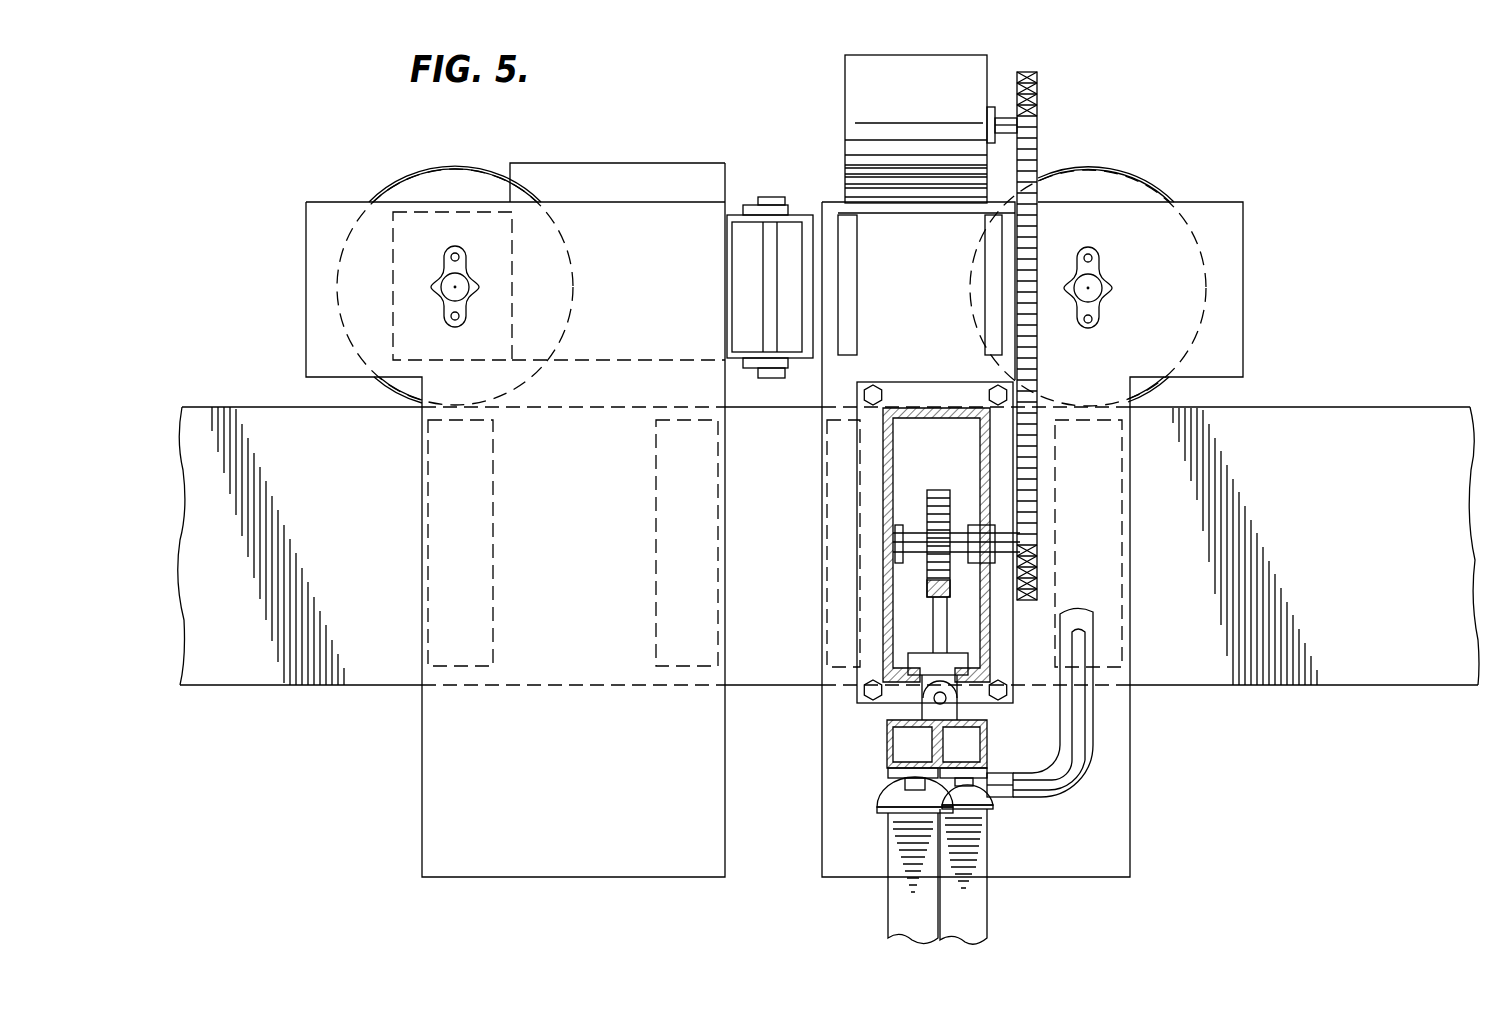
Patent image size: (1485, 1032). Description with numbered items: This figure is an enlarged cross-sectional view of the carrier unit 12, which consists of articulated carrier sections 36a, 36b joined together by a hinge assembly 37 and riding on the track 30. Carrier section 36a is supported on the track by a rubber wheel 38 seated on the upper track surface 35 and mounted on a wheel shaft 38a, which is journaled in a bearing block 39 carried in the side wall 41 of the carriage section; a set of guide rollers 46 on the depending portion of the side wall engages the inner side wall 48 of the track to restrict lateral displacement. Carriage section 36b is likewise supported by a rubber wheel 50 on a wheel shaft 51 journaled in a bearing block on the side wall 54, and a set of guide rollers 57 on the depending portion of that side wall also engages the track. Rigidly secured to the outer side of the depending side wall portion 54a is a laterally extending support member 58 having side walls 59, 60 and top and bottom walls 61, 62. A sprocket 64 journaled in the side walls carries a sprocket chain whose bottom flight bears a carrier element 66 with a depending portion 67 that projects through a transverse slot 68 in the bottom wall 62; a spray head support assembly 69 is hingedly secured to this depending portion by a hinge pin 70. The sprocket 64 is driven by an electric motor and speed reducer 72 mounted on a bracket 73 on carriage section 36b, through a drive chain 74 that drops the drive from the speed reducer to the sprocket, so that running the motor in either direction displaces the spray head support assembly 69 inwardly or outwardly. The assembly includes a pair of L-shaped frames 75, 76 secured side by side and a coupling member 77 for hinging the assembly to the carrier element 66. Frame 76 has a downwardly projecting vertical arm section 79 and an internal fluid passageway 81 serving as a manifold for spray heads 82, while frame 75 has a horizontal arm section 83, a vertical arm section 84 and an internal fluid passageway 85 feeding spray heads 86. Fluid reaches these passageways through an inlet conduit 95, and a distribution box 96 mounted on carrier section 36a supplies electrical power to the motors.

The carrier unit 12 is at (1114, 82).
The track 30 is at (1385, 405).
The table top surface 35 is at (193, 409).
The carrier section 36a is at (302, 287).
The carriage section 36b is at (1247, 290).
The hinge assembly 37 is at (768, 188).
The rubber wheel 38 is at (431, 173).
The wheel shaft 38a is at (470, 287).
The bearing block 39 is at (462, 314).
The side wall 41 is at (312, 366).
The guide rollers 46 is at (656, 527).
The inner side wall 48 is at (380, 668).
The rubber wheel 50 is at (1133, 173).
The wheel shaft 51 is at (1105, 285).
The side wall 54 is at (1228, 341).
The depending side wall portion 54a is at (1115, 492).
The guide rollers 57 is at (828, 562).
The support member 58 is at (993, 452).
The side wall 59 is at (889, 483).
The side wall 60 is at (993, 495).
The top wall 61 is at (923, 407).
The bottom wall 62 is at (897, 684).
The sprocket 64 is at (928, 507).
The carrier element 66 is at (906, 660).
The depending portion 67 is at (958, 676).
The transverse slot 68 is at (957, 705).
The spray head support assembly 69 is at (992, 848).
The hinge pin 70 is at (957, 706).
The speed reducer 72 is at (935, 100).
The bracket 73 is at (913, 212).
The drive chain 74 is at (1038, 229).
The L-shaped frame 75 is at (887, 914).
The L-shaped frame 76 is at (991, 917).
The coupling member 77 is at (888, 724).
The vertical arm section 79 is at (990, 897).
The internal fluid passageway 81 is at (1000, 760).
The spray heads 82 is at (980, 803).
The horizontal arm section 83 is at (890, 754).
The vertical arm section 84 is at (888, 856).
The internal fluid passageway 85 is at (907, 753).
The spray heads 86 is at (888, 810).
The inlet conduit 95 is at (1095, 716).
The distribution box 96 is at (633, 163).